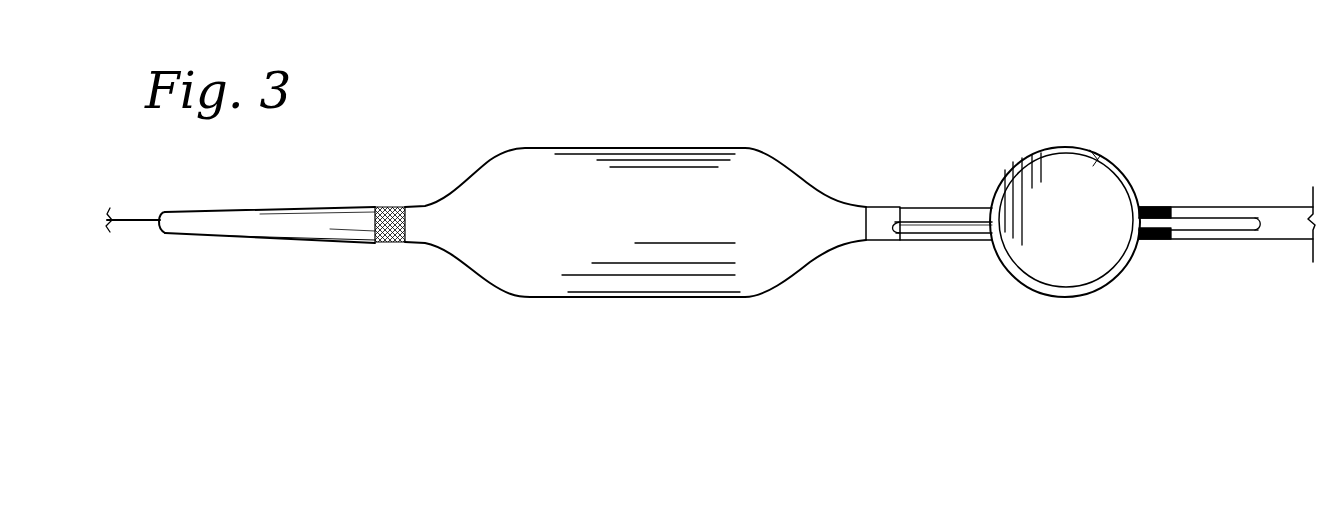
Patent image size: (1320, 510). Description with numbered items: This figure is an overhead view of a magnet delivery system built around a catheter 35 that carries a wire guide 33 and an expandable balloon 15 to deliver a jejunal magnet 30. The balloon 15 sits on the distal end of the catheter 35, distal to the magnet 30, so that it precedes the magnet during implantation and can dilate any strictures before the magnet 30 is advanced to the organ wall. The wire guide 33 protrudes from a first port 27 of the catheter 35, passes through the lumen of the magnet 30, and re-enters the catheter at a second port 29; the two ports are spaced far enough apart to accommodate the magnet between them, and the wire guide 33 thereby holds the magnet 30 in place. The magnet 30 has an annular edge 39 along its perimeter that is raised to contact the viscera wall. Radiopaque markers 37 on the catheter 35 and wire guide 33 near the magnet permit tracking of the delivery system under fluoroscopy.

The expandable balloon 15 is at (664, 134).
The first port 27 is at (1250, 216).
The second port 29 is at (900, 222).
The jejunal magnet 30 is at (1080, 112).
The wire guide 33 is at (938, 232).
The catheter 35 is at (880, 208).
The radiopaque marker 37 is at (388, 207).
The annular edge 39 is at (1112, 163).